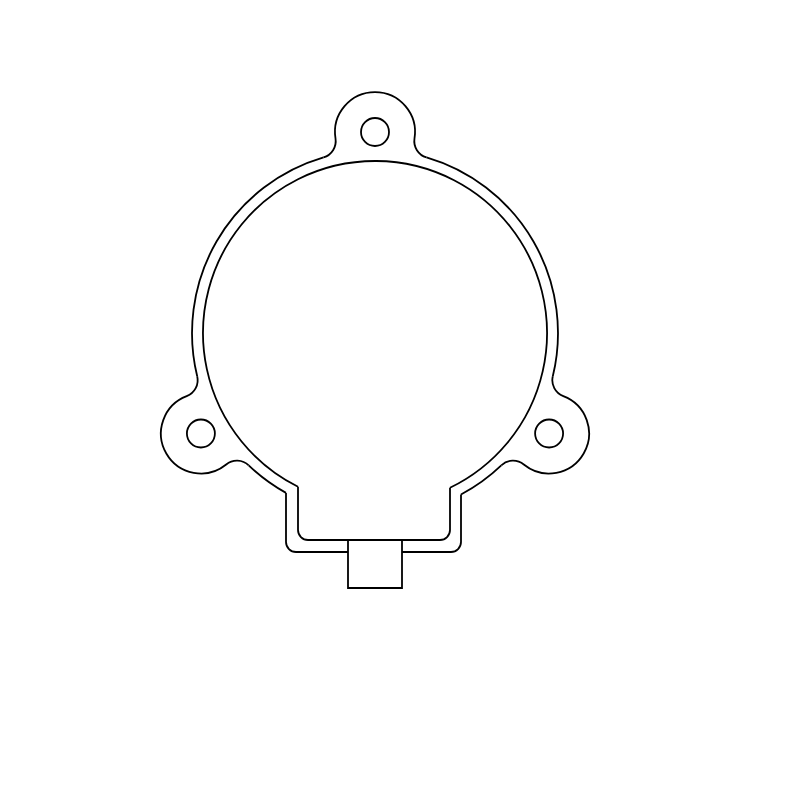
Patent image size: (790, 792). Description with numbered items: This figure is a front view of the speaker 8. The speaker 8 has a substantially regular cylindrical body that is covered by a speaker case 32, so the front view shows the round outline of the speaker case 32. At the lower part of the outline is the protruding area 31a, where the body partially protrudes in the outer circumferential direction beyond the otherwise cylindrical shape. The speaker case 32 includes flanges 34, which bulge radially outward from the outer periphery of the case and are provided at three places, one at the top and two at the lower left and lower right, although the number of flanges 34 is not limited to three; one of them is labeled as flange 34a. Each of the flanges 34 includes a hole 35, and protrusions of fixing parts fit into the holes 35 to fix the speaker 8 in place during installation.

The speaker 8 is at (535, 227).
The speaker case 32 is at (558, 340).
The flange 34 is at (372, 298).
The mounting tab 34a is at (183, 470).
The hole 35 is at (366, 119).
The protruding area 31a is at (462, 503).